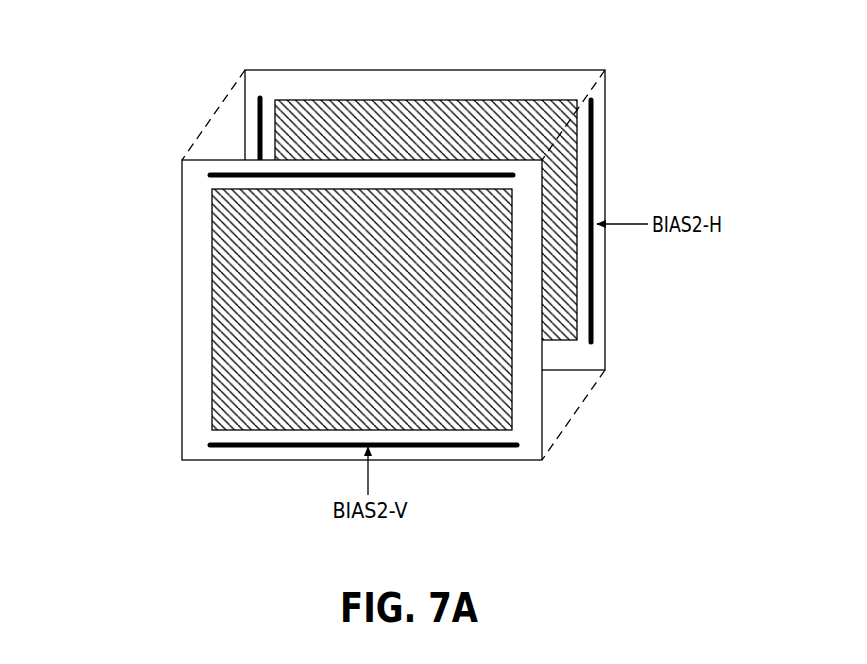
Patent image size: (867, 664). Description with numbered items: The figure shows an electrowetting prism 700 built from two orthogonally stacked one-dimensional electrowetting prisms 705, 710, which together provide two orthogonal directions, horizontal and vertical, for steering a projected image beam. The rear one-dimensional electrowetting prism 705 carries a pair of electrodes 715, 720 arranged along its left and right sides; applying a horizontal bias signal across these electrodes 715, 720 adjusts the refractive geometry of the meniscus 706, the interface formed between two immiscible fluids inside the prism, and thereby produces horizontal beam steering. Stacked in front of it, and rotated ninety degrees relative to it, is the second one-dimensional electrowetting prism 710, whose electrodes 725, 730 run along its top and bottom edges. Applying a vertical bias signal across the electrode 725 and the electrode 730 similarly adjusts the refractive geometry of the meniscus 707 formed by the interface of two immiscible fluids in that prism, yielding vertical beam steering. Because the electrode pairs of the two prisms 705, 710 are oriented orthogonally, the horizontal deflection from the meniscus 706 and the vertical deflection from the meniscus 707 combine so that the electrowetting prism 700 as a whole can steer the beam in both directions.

The electrowetting prism 700 is at (117, 117).
The one-dimensional electrowetting prism 705 is at (605, 98).
The meniscus 706 is at (462, 142).
The meniscus 707 is at (420, 280).
The one-dimensional electrowetting prism 710 is at (182, 390).
The electrode 715 is at (592, 287).
The electrode 720 is at (258, 120).
The electrode 725 is at (405, 173).
The electrode 730 is at (475, 447).